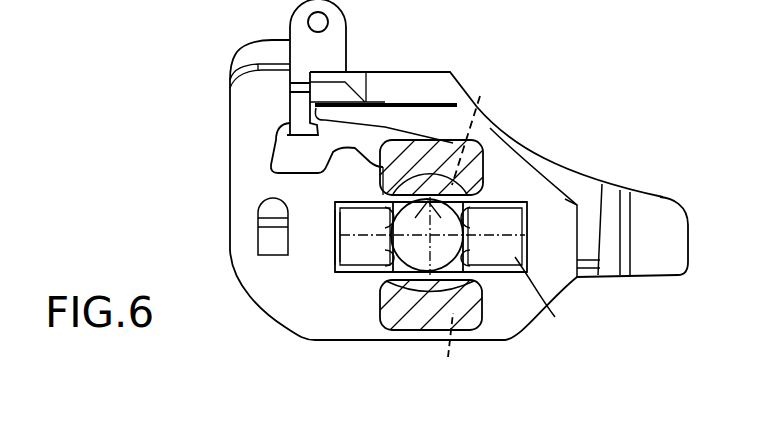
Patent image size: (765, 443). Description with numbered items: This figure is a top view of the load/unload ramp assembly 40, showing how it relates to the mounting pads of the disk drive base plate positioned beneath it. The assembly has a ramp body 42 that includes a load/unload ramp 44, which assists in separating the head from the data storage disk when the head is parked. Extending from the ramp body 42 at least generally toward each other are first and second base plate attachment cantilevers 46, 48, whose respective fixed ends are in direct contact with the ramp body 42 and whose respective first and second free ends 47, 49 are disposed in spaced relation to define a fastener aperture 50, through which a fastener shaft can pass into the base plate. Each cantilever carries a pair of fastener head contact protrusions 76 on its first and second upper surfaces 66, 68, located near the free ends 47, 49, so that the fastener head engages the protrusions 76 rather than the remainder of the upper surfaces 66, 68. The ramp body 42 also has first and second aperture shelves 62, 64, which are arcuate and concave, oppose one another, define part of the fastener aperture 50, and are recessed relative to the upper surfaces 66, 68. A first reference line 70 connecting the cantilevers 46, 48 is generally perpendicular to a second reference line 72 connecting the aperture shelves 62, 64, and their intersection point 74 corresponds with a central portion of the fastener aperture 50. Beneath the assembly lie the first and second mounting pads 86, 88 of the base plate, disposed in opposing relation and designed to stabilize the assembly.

The load/unload ramp assembly 40 is at (522, 92).
The ramp body 42 is at (242, 228).
The load/unload ramp 44 is at (663, 262).
The first base plate attachment cantilever 46 is at (352, 262).
The first free end 47 is at (387, 231).
The second base plate attachment cantilever 48 is at (520, 213).
The second free end 49 is at (520, 228).
The fastener aperture 50 is at (408, 262).
The first aperture shelf 62 is at (478, 196).
The second aperture shelf 64 is at (477, 277).
The first upper surface 66 is at (350, 234).
The second upper surface 68 is at (473, 250).
The first reference line 70 is at (449, 347).
The second reference line 72 is at (487, 90).
The intersection point 74 is at (385, 195).
The fastener head contact protrusions 76 is at (383, 257).
The first mounting pad 86 is at (403, 140).
The second mounting pad 88 is at (413, 320).